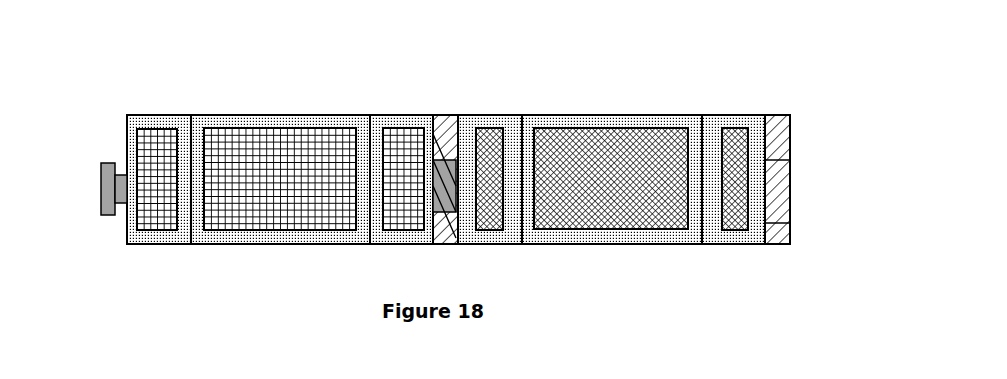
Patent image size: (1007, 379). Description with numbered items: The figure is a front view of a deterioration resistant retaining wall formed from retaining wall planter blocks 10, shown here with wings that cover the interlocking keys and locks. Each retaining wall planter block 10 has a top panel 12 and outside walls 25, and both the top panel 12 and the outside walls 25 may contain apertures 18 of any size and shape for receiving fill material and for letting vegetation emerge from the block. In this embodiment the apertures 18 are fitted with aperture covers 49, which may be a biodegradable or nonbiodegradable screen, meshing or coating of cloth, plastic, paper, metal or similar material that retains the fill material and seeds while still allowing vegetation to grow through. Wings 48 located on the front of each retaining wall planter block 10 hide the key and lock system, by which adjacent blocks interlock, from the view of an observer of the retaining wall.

The retaining wall planter block 10 is at (445, 163).
The top panel 12 is at (322, 115).
The apertures 18 is at (162, 233).
The outside walls 25 is at (367, 233).
The wings 48 is at (447, 120).
The aperture covers 49 is at (431, 172).